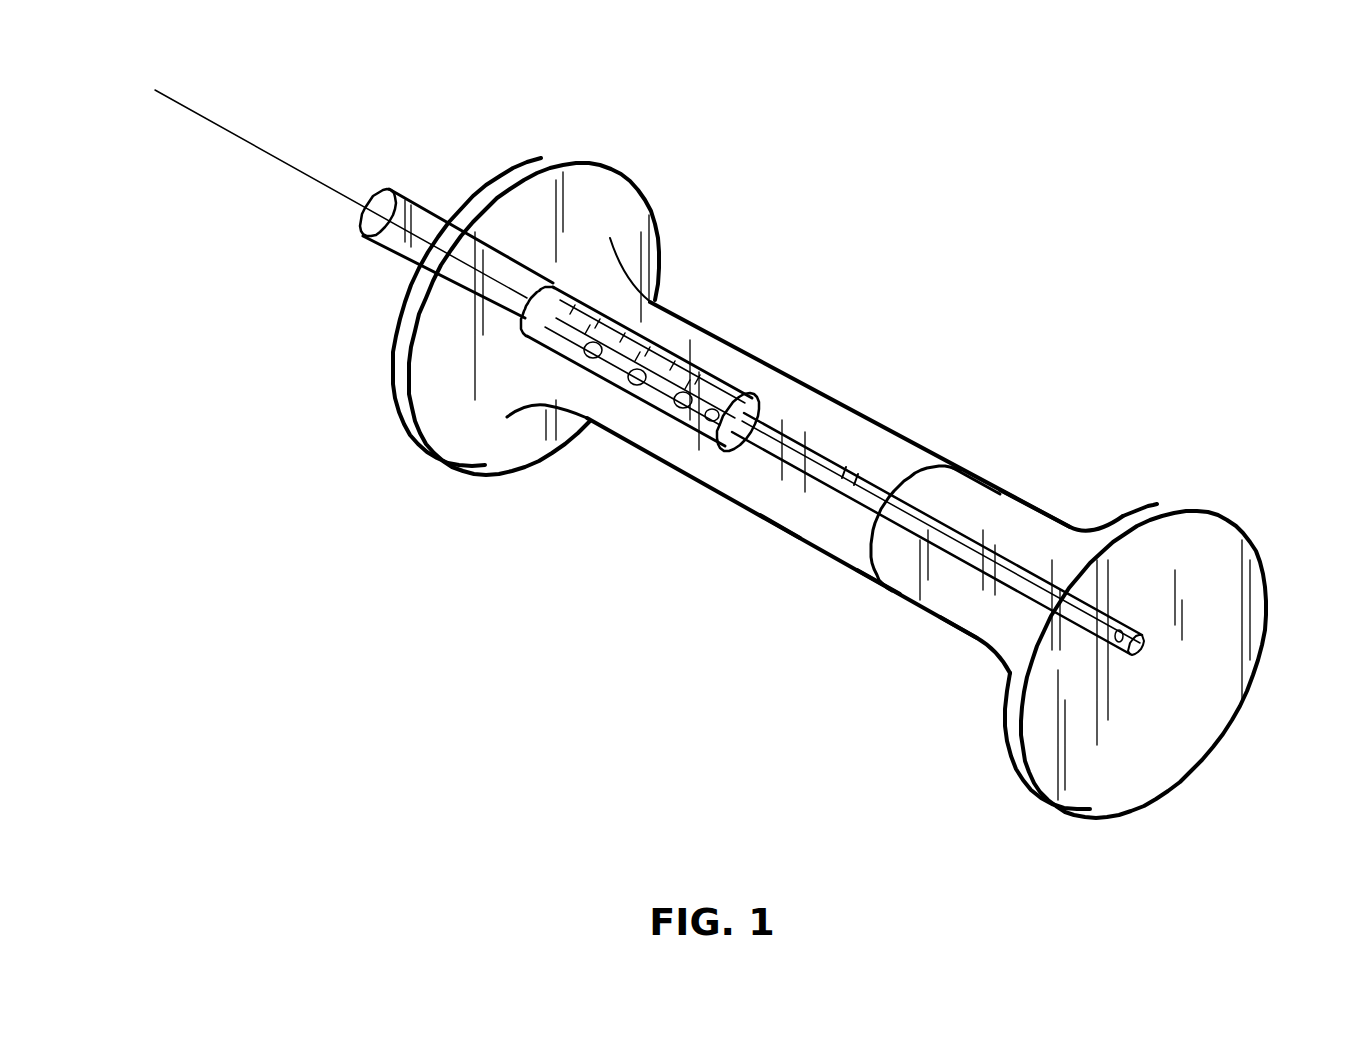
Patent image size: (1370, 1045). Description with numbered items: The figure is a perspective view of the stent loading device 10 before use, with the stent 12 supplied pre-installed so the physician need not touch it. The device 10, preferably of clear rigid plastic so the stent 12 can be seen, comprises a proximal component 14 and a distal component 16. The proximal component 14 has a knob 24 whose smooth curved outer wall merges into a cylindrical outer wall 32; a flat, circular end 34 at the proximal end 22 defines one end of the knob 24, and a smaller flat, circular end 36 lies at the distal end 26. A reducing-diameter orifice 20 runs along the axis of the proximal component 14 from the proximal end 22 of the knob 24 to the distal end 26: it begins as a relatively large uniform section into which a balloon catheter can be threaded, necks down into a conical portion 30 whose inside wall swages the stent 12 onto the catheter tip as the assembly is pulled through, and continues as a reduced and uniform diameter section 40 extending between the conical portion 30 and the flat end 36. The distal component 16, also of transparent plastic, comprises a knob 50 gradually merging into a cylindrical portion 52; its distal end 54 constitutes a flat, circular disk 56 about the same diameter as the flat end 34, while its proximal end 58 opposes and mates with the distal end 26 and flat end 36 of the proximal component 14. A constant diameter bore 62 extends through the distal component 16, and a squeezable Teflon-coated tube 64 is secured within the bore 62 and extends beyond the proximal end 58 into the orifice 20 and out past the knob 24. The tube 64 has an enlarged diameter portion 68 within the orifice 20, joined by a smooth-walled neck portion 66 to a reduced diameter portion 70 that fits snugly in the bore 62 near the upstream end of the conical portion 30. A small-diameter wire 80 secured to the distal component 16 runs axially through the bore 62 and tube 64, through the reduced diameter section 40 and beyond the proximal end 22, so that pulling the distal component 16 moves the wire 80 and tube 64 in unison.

The stent loading device 10 is at (905, 360).
The stent 12 is at (675, 422).
The proximal component 14 is at (780, 372).
The distal component 16 is at (1037, 510).
The orifice 20 is at (718, 368).
The proximal end 22 is at (552, 131).
The knob 24 is at (590, 184).
The distal end 26 is at (953, 468).
The conical portion 30 is at (788, 410).
The cylindrical outer wall 32 is at (650, 363).
The flat, circular end 34 is at (398, 398).
The flat, circular end 36 is at (885, 586).
The reduced and uniform diameter section 40 is at (840, 508).
The knob 50 is at (1137, 777).
The cylindrical portion 52 is at (940, 625).
The distal end 54 is at (1237, 585).
The flat, circular disk 56 is at (1172, 697).
The proximal end 58 is at (955, 475).
The constant diameter bore 62 is at (1150, 495).
The tube 64 is at (430, 208).
The neck portion 66 is at (716, 485).
The enlarged diameter portion 68 is at (523, 272).
The reduced diameter portion 70 is at (850, 442).
The wire 80 is at (318, 178).